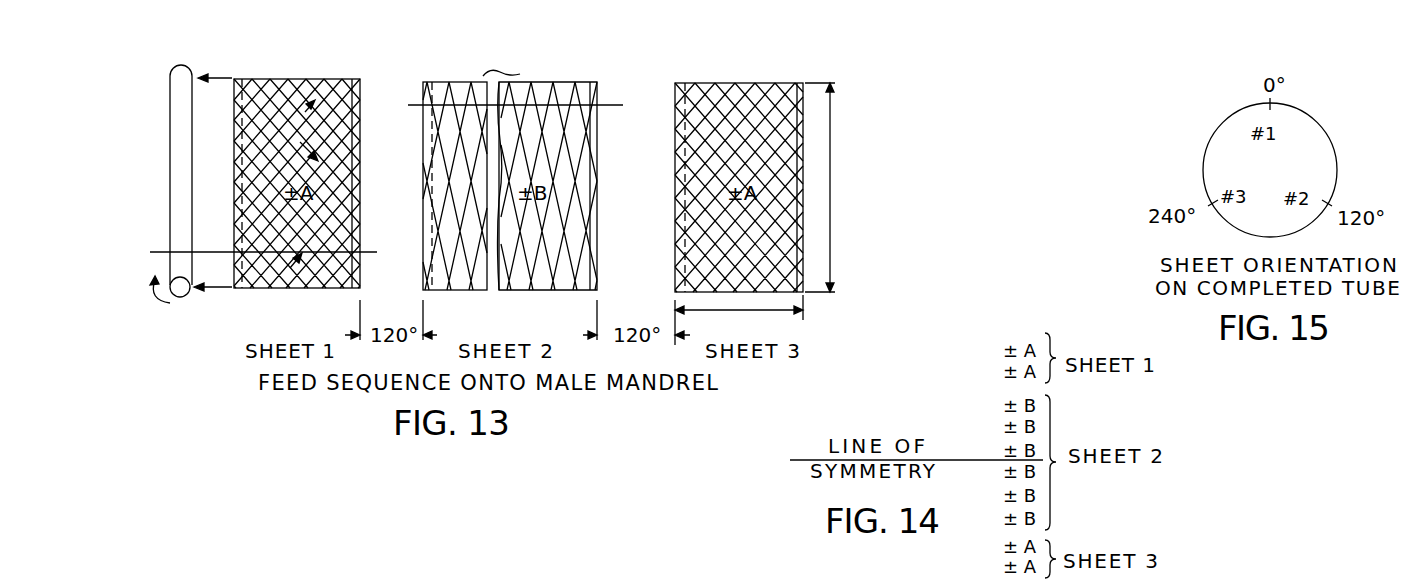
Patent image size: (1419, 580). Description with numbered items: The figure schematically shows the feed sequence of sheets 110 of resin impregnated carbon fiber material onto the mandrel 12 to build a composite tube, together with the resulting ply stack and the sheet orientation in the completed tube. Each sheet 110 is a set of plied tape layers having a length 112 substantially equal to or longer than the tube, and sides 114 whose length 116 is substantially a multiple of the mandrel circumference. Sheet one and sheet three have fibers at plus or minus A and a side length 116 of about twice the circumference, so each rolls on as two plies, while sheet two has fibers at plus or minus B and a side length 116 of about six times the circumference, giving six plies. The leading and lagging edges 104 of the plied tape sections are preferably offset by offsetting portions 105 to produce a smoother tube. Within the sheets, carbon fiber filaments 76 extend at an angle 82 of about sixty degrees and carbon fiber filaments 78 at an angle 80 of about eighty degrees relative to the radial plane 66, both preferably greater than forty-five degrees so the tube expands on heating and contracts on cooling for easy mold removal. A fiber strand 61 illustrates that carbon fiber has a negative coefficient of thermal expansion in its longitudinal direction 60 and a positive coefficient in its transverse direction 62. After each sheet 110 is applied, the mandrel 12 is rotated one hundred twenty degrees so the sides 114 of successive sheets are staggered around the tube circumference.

In FIG. 13, the mandrel 12 is at (172, 108).
In FIG. 15, the mandrel 12 is at (1322, 129).
In FIG. 13, the longitudinal direction 60 is at (305, 112).
In FIG. 13, the fiber strand 61 is at (335, 90).
In FIG. 13, the transverse direction 62 is at (330, 140).
In FIG. 13, the radial plane 66 is at (211, 250).
In FIG. 13, the carbon fiber filaments 76 is at (345, 178).
In FIG. 13, the carbon fiber filaments 78 is at (575, 222).
In FIG. 13, the fiber angle 80 is at (540, 100).
In FIG. 13, the fiber angle 82 is at (296, 262).
In FIG. 13, the leading and lagging edges 104 is at (430, 84).
In FIG. 13, the offsetting portions 105 is at (800, 84).
In FIG. 13, the sheets 110 is at (256, 84).
In FIG. 13, the sheet length 112 is at (834, 110).
In FIG. 13, the sides 114 is at (240, 290).
In FIG. 13, the side length 116 is at (775, 312).